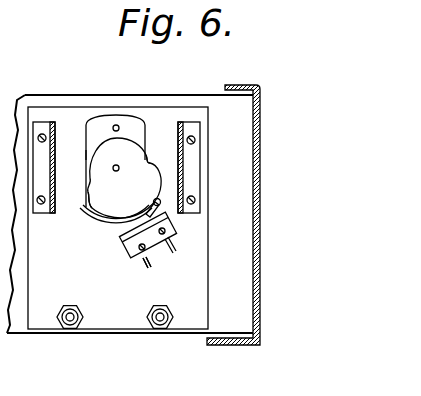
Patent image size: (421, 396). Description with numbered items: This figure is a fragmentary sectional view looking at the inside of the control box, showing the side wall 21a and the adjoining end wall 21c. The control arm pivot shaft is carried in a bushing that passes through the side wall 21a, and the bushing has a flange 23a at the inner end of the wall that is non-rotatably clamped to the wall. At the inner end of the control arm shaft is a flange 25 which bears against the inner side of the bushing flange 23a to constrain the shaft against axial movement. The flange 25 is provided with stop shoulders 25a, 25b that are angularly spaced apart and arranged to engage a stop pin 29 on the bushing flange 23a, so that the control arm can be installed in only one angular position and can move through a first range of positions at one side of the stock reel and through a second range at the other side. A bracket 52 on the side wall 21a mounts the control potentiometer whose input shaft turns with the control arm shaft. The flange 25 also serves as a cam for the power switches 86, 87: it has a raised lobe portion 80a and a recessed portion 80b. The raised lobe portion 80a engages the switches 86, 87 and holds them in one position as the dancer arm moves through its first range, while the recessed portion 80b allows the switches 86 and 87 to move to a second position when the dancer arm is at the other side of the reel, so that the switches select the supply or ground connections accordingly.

The side wall 21a is at (218, 110).
The end wall 21c is at (262, 178).
The bushing flange 23a is at (93, 127).
The flange 25 is at (87, 174).
The stop shoulder 25a is at (152, 164).
The stop shoulder 25b is at (91, 187).
The stop pin 29 is at (116, 127).
The bracket 52 is at (52, 123).
The raised lobe portion 80a is at (117, 221).
The recessed portion 80b is at (87, 155).
The switch 86 is at (158, 250).
The switch 87 is at (147, 262).